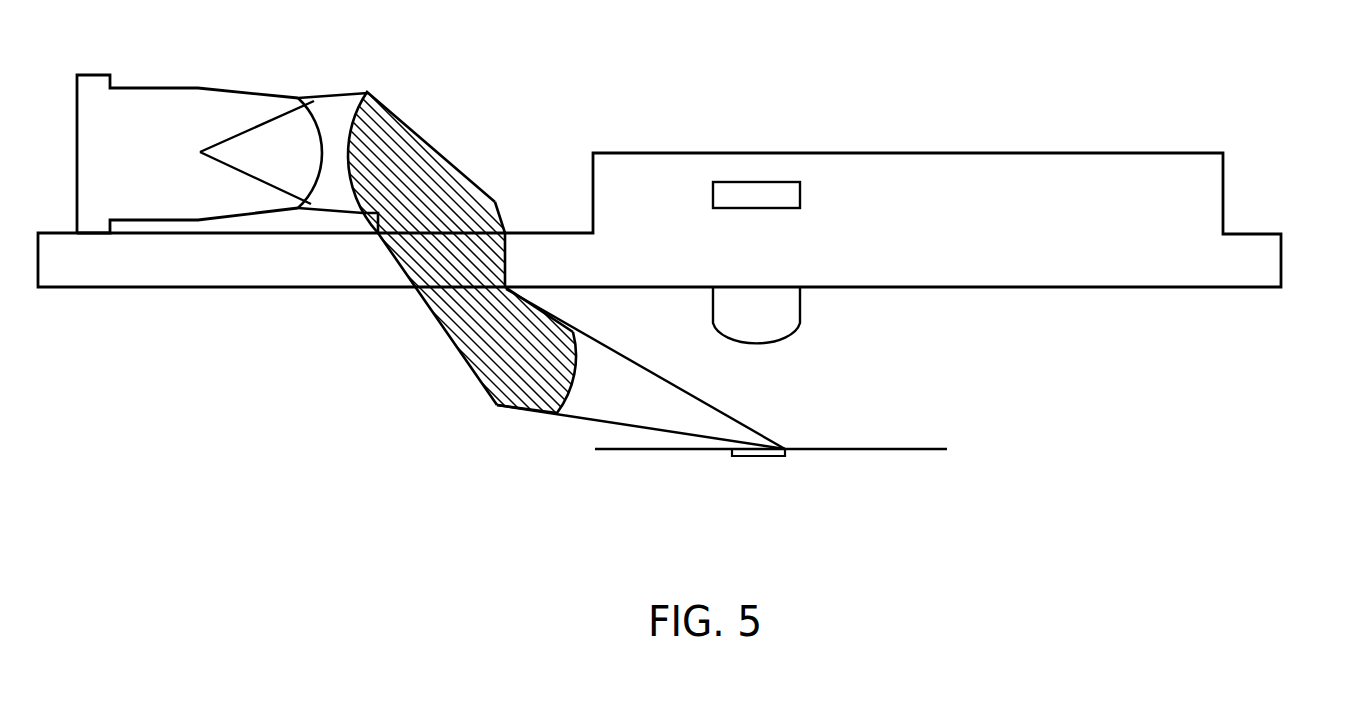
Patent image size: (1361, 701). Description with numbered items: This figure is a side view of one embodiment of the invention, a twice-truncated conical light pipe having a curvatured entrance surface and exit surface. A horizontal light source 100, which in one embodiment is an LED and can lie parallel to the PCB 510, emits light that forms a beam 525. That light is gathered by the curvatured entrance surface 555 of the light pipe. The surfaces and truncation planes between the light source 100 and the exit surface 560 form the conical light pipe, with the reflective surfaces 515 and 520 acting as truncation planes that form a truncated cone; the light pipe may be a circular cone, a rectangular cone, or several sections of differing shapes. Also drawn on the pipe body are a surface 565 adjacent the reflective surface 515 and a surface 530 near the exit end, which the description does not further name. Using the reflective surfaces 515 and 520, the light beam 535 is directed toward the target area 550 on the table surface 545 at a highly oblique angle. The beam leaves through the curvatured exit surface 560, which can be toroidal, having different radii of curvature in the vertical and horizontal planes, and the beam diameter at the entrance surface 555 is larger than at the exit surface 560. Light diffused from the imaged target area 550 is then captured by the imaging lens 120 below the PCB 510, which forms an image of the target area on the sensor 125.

The light source 100 is at (164, 83).
The beam 525 is at (343, 96).
The curvatured entrance surface 555 is at (367, 117).
The reflective surface 515 is at (437, 144).
The second prism surface 565 is at (504, 226).
The reflective surface 520 is at (433, 318).
The focusing lens surface 530 is at (528, 412).
The light beam 535 is at (598, 342).
The curvatured exit surface 560 is at (578, 413).
The table surface 545 is at (905, 449).
The target area 550 is at (757, 457).
The PCB 510 is at (1283, 262).
The sensor 125 is at (806, 197).
The imaging lens 120 is at (803, 300).